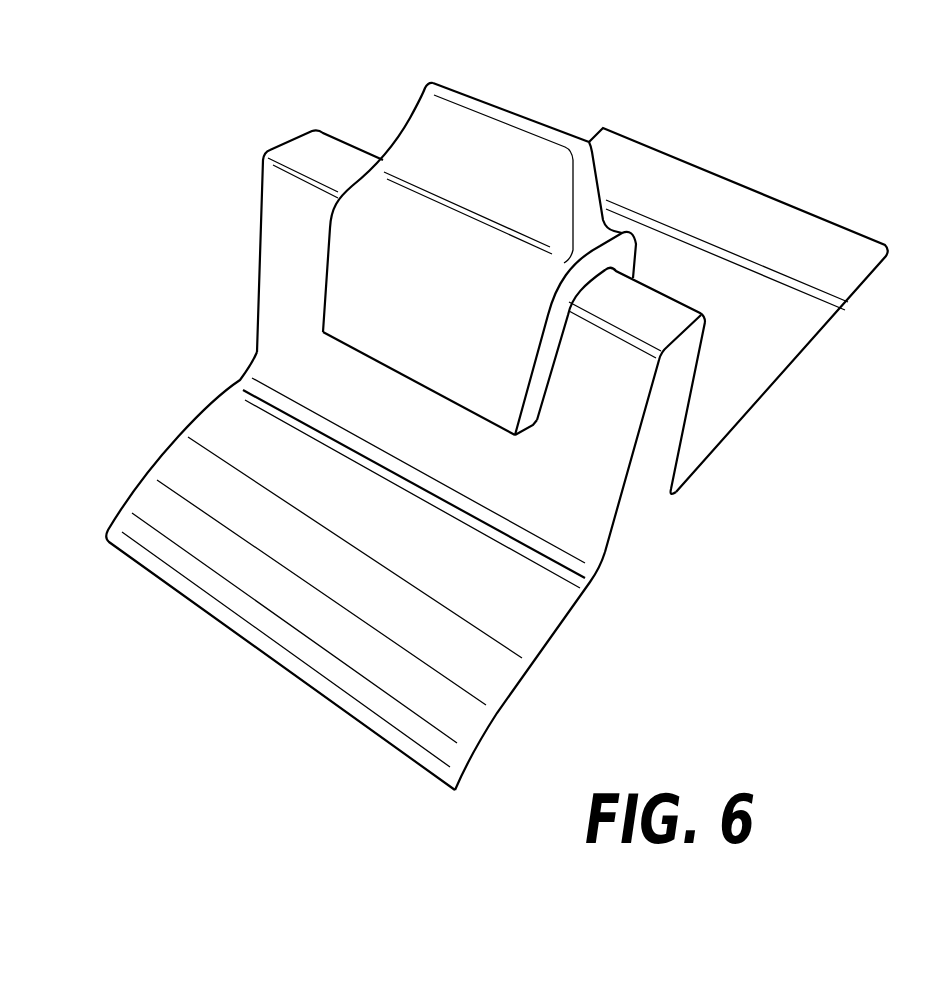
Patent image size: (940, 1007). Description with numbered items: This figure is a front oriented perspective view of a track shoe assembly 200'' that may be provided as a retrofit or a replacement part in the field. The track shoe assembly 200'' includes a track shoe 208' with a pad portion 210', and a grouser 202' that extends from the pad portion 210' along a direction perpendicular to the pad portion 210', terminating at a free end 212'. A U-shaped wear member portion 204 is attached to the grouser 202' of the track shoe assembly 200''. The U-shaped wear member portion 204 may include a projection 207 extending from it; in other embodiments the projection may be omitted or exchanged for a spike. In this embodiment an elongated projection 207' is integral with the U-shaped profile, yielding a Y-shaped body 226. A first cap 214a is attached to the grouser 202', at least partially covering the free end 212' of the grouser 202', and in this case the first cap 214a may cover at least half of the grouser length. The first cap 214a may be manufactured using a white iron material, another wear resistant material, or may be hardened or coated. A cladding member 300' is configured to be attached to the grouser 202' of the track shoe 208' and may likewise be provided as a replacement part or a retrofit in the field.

The track shoe assembly 200'' is at (504, 396).
The grouser 202' is at (697, 433).
The U-shaped wear member portion 204 is at (414, 218).
The projection 207 is at (503, 98).
The elongated projection 207' is at (577, 168).
The track shoe 208' is at (746, 310).
The pad portion 210' is at (402, 571).
The free end 212' is at (647, 344).
The first cap 214a is at (405, 156).
The Y-shaped body 226 is at (373, 288).
The cladding member 300' is at (511, 72).